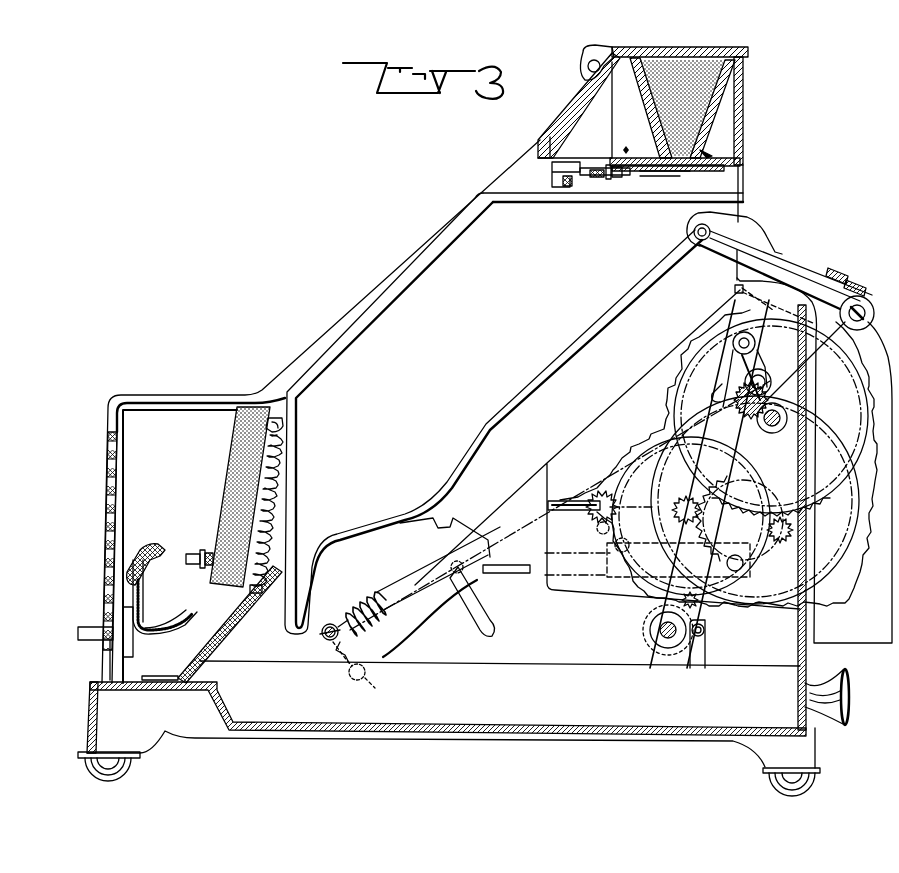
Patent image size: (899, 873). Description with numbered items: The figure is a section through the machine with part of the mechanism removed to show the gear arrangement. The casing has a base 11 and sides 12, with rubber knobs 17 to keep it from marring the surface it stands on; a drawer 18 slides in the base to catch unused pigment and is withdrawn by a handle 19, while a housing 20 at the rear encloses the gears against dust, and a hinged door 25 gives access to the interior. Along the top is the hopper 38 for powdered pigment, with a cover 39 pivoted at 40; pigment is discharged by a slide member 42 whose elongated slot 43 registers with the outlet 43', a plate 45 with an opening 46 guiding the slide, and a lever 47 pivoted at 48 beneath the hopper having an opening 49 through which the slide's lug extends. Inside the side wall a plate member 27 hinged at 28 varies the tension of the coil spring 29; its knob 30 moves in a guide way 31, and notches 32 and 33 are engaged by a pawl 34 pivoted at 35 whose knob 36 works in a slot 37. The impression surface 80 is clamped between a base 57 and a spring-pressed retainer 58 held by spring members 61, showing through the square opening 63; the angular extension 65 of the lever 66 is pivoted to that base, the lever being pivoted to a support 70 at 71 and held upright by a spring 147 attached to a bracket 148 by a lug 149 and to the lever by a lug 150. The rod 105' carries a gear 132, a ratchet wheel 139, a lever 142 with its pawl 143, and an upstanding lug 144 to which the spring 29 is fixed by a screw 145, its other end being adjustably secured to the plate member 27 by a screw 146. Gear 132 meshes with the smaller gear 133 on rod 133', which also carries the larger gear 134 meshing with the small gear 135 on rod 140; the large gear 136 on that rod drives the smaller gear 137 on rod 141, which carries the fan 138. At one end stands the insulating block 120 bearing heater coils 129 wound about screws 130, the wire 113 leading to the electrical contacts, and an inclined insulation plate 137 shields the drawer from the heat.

The base 11 is at (803, 747).
The sides 12 is at (142, 430).
The rubber knobs 17 is at (128, 770).
The drawer 18 is at (540, 720).
The handle 19 is at (848, 690).
The housing 20 is at (603, 410).
The hinged door 25 is at (402, 302).
The plate member 27 is at (465, 530).
The hinge of plate member 28 is at (322, 634).
The coil spring 29 is at (388, 616).
The knob 30 is at (447, 560).
The guide way 31 is at (492, 611).
The notch 32 is at (445, 510).
The notch 33 is at (504, 576).
The pawl 34 is at (542, 585).
The pivot of pawl 35 is at (752, 576).
The knob 36 is at (615, 578).
The slot 37 is at (626, 540).
The hopper 38 is at (744, 106).
The cover 39 is at (750, 55).
The pivot of cover 40 is at (584, 60).
The slide member 42 is at (744, 163).
The elongated slot 43 is at (698, 108).
The outlet 43' is at (645, 133).
The plate 45 is at (706, 172).
The opening 46 is at (645, 174).
The lever 47 is at (605, 178).
The pivot of lever 48 is at (552, 179).
The opening 49 is at (616, 180).
The base of retaining member 57 is at (870, 300).
The spring-pressed retainer 58 is at (836, 270).
The spring members 61 is at (743, 225).
The square opening 63 is at (782, 250).
The angular extension 65 is at (850, 333).
The lever 66 is at (715, 524).
The support 70 is at (655, 662).
The pivot of lever 71 is at (658, 632).
The impression surface 80 is at (852, 282).
The rod 105' is at (804, 412).
The wire 113 is at (140, 550).
The block of insulating material 120 is at (233, 470).
The heater coils 129 is at (270, 471).
The screws 130 is at (284, 422).
The gear 132 is at (797, 487).
The smaller gear 133 is at (809, 532).
The rod 133' is at (788, 555).
The gear 134 is at (850, 575).
The small gear 135 is at (688, 498).
The large gear 136 is at (640, 465).
The smaller gear 137 is at (600, 492).
The fan 138 is at (576, 486).
The ratchet wheel 139 is at (735, 384).
The rod 140 is at (722, 392).
The rod 141 is at (598, 530).
The lever 142 is at (762, 356).
The pawl 143 is at (740, 380).
The upstanding lug 144 is at (772, 402).
The screw 145 is at (758, 422).
The screw 146 is at (336, 655).
The spring 147 is at (652, 620).
The bracket 148 is at (706, 656).
The lug 149 is at (704, 630).
The lug 150 is at (702, 606).